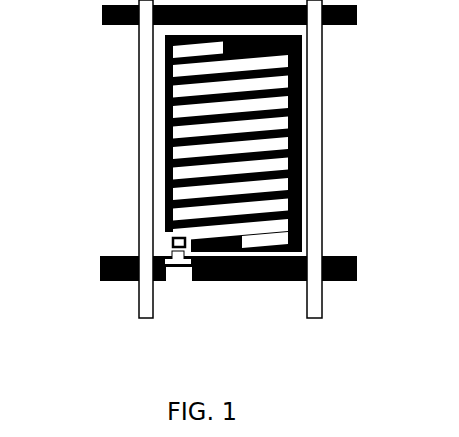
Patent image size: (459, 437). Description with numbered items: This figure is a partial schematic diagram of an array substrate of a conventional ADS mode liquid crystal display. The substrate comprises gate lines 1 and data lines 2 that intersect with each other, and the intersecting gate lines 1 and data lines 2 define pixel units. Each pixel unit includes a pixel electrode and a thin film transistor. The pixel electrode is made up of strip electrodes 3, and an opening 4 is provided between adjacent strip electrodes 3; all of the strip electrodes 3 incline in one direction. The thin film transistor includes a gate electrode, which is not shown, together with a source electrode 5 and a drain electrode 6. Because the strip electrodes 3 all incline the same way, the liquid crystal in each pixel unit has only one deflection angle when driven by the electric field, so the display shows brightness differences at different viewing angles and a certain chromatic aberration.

The gate line 1 is at (102, 23).
The data line 2 is at (148, 53).
The strip electrode 3 is at (167, 129).
The opening 4 is at (203, 88).
The source electrode 5 is at (182, 273).
The drain electrode 6 is at (164, 242).